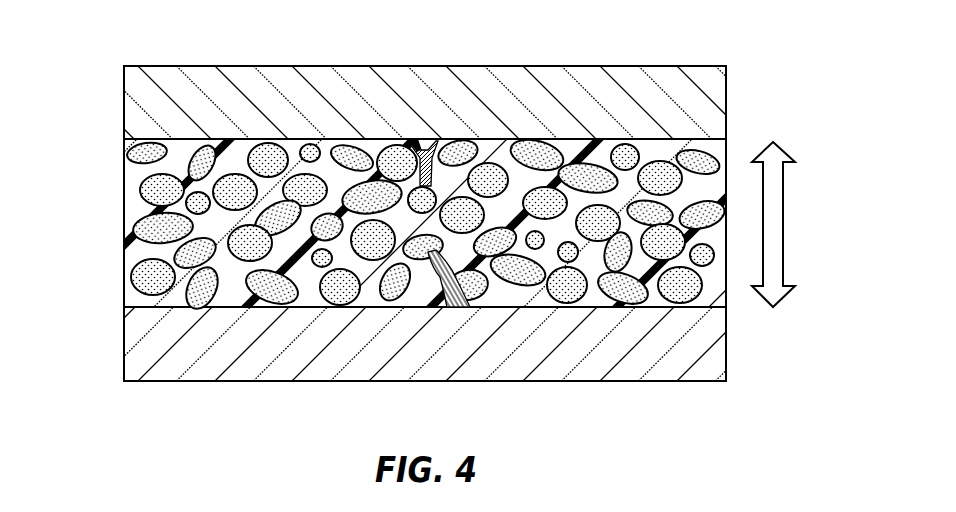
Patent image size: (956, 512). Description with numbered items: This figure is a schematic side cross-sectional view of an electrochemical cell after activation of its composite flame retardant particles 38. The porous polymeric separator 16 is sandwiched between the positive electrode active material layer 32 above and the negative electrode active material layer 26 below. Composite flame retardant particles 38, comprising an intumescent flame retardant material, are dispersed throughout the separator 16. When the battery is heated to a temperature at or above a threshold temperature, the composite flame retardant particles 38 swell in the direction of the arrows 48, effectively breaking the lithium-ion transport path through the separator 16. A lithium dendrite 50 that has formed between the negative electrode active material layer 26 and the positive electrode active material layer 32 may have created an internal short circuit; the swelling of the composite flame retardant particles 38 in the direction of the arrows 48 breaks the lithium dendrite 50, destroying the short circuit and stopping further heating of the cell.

The porous polymeric separator 16 is at (443, 228).
The negative electrode active material layer 26 is at (123, 343).
The positive electrode active material layer 32 is at (123, 98).
The composite flame retardant particles 38 is at (626, 143).
The arrows 48 is at (783, 220).
The lithium dendrite 50 is at (418, 143).